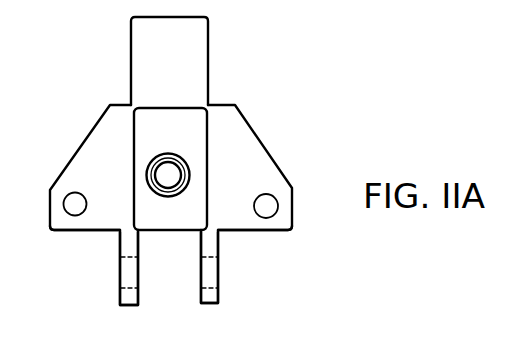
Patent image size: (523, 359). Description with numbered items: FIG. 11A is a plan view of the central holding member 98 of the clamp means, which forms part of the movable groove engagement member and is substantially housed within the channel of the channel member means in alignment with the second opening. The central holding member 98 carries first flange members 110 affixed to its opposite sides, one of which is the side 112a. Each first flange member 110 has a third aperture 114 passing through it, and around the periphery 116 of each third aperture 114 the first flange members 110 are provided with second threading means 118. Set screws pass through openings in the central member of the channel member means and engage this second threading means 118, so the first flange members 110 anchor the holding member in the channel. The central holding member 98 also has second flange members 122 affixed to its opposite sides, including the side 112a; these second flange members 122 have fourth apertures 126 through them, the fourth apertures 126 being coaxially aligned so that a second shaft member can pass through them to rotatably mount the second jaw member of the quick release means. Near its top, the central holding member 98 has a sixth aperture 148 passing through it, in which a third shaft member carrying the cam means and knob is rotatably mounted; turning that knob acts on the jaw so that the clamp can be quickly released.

The central holding member 98 is at (186, 112).
The first flange members 110 is at (106, 126).
The side of the central holding member 112a is at (128, 120).
The third aperture 114 is at (79, 212).
The periphery of the third aperture 116 is at (264, 217).
The second threading means 118 is at (75, 193).
The second flange members 122 is at (124, 284).
The fourth apertures 126 is at (201, 250).
The sixth aperture 148 is at (185, 157).